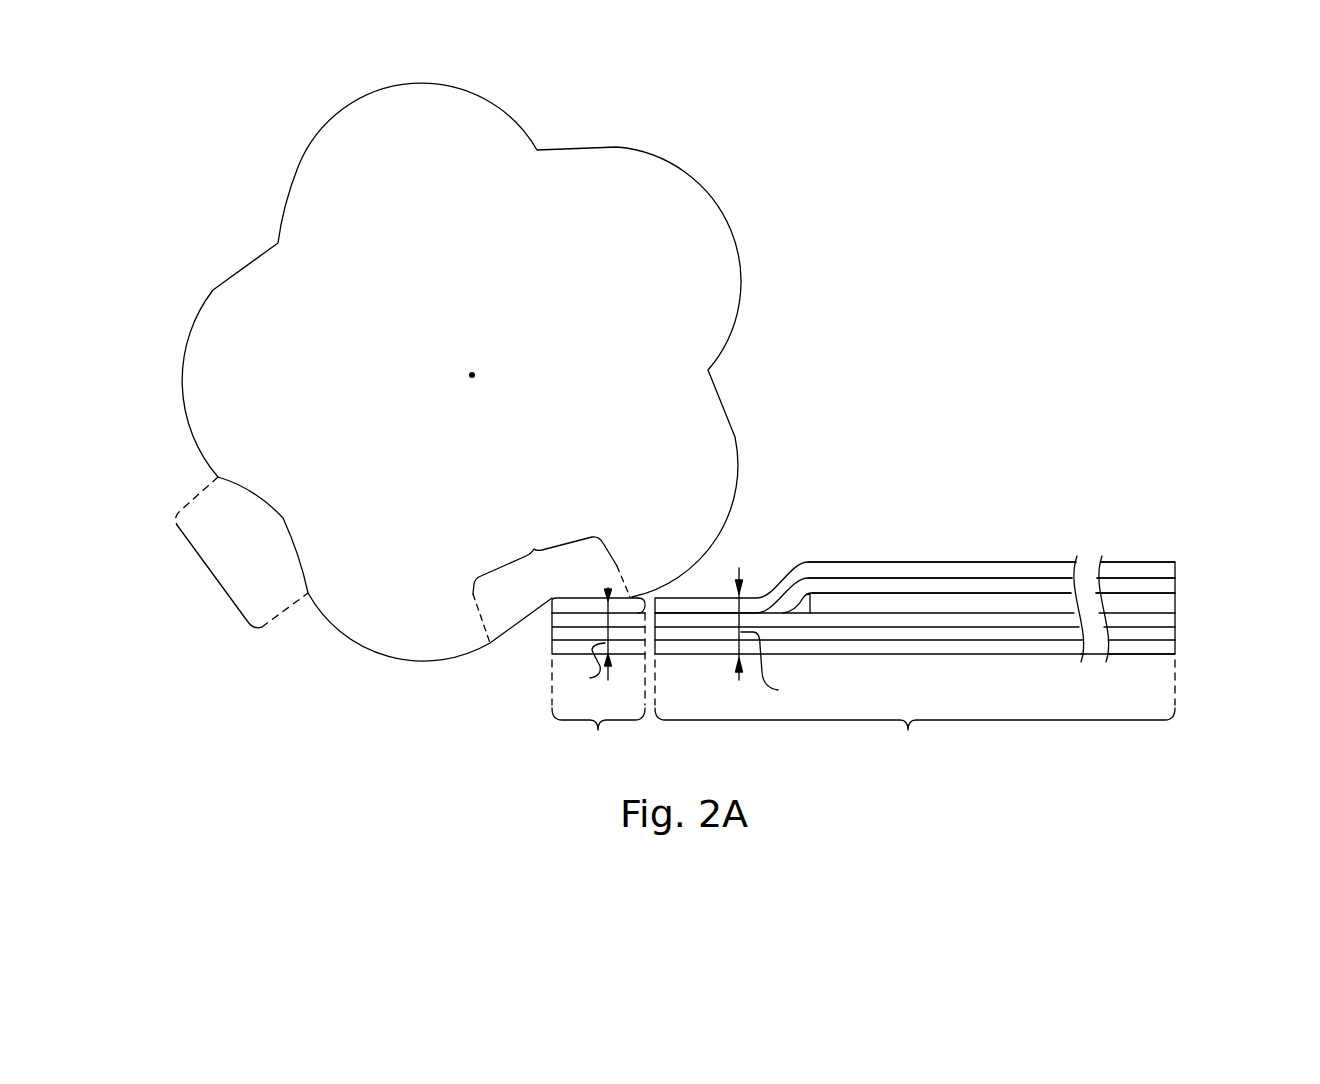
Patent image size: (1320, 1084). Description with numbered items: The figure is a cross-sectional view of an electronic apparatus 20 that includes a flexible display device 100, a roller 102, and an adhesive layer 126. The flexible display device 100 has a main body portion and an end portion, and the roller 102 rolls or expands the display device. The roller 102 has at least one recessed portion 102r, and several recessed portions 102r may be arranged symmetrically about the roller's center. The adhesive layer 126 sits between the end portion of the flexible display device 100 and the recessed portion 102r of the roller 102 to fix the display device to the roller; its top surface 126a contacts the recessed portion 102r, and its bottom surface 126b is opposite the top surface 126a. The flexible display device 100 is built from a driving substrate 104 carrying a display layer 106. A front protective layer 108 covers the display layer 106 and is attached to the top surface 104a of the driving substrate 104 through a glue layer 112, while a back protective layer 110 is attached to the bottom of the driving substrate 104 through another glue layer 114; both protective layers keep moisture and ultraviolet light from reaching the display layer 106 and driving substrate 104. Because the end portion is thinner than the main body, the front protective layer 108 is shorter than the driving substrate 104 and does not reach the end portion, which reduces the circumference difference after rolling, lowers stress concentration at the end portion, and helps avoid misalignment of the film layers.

The electronic apparatus 20 is at (193, 61).
The flexible display device 100 is at (870, 589).
The roller 102 is at (694, 203).
The recessed portion 102r is at (213, 575).
The driving substrate 104 is at (952, 662).
The top surface of the driving substrate 104a is at (697, 615).
The display layer 106 is at (1170, 603).
The front protective layer 108 is at (1168, 569).
The back protective layer 110 is at (1172, 647).
The glue layer 112 is at (1170, 585).
The glue layer 114 is at (1170, 633).
The adhesive layer 126 is at (663, 602).
The top surface of the adhesive layer 126a is at (619, 610).
The bottom surface of the adhesive layer 126b is at (633, 610).